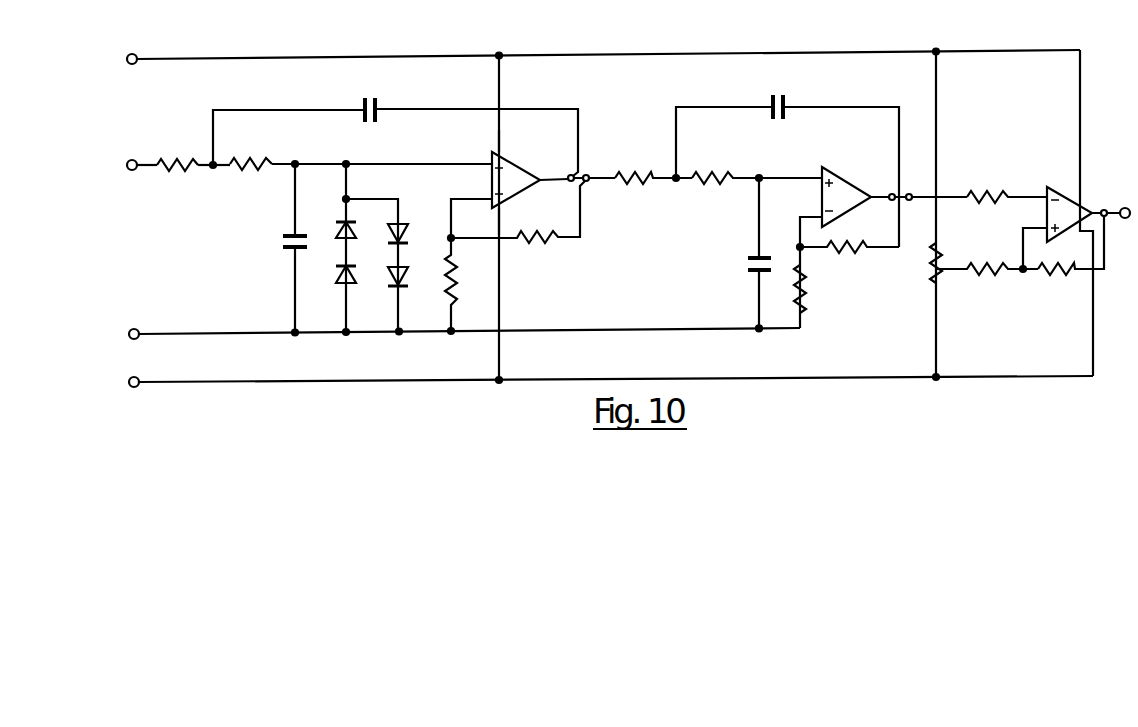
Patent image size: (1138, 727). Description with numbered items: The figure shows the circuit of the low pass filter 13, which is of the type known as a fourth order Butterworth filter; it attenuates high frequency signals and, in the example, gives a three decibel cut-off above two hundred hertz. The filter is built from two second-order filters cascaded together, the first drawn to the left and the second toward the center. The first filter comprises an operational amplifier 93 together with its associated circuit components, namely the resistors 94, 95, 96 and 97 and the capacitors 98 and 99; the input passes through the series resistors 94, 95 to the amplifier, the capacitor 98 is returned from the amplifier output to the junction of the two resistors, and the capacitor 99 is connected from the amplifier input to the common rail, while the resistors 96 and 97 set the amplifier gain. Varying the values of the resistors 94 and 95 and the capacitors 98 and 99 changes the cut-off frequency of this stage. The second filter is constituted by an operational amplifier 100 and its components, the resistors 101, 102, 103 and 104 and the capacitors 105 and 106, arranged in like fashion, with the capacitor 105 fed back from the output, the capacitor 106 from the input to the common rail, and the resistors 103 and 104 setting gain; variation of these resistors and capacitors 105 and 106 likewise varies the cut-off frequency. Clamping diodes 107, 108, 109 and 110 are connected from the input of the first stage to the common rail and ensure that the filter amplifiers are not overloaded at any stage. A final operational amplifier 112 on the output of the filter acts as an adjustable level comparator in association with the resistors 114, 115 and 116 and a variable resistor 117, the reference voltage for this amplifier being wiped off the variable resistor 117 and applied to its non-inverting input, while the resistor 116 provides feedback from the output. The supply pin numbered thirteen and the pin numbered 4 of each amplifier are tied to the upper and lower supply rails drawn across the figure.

The resistor 94 is at (190, 152).
The resistor 95 is at (265, 152).
The capacitor 98 is at (381, 101).
The capacitor 99 is at (283, 226).
The clamping diode 107 is at (340, 236).
The clamping diode 108 is at (345, 282).
The clamping diode 109 is at (400, 238).
The clamping diode 110 is at (396, 280).
The resistor 96 is at (453, 296).
The resistor 97 is at (558, 222).
The operational amplifier 93 is at (492, 182).
The low pass filter 13 is at (785, 135).
The negative supply terminal 4 is at (1112, 232).
The resistor 101 is at (650, 166).
The resistor 102 is at (730, 166).
The capacitor 105 is at (793, 96).
The capacitor 106 is at (751, 272).
The operational amplifier 100 is at (822, 199).
The resistor 103 is at (821, 289).
The resistor 104 is at (868, 250).
The variable resistor 117 is at (931, 270).
The resistor 114 is at (998, 183).
The operational amplifier 112 is at (1047, 216).
The resistor 115 is at (970, 282).
The resistor 116 is at (1043, 282).